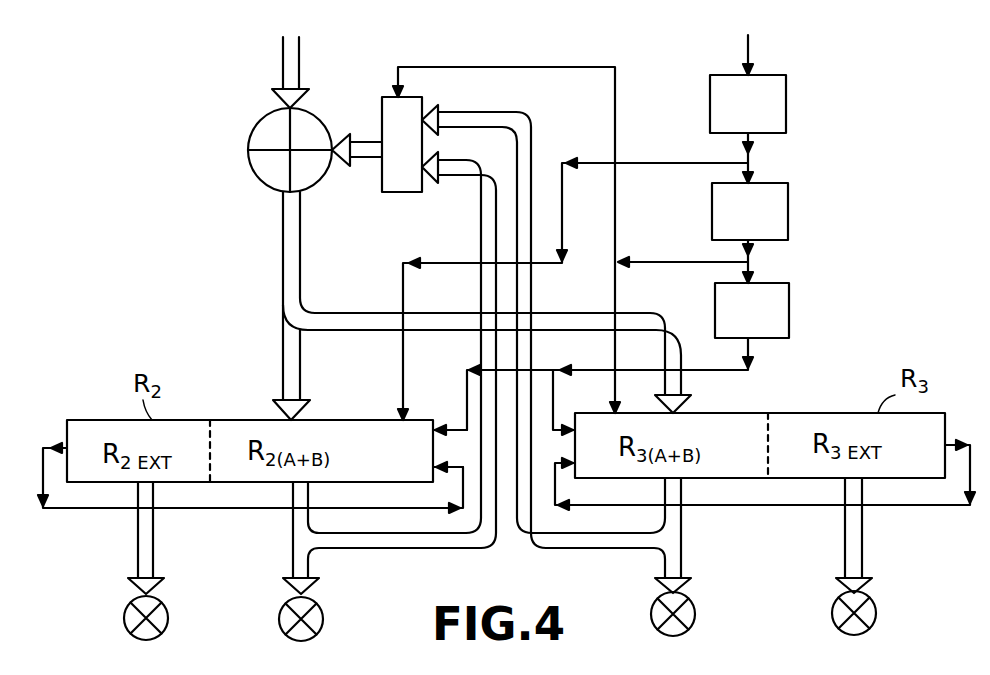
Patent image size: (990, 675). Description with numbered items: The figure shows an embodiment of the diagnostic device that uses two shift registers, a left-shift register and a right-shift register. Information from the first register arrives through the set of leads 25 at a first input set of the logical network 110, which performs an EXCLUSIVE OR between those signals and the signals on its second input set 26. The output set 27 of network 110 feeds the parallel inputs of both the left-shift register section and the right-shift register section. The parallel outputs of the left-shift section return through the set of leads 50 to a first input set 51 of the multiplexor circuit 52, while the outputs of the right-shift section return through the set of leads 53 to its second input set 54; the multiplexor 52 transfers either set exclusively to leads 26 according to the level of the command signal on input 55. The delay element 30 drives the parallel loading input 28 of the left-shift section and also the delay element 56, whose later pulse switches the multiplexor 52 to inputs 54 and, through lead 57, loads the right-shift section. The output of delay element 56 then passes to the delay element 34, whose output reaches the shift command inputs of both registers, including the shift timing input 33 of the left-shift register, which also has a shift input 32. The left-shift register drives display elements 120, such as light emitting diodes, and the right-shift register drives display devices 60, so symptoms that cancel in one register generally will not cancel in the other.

The input terminals 25 is at (282, 64).
The logical network 110 is at (250, 150).
The second set of input terminals 26 is at (366, 140).
The multiplexor circuit 52 is at (384, 192).
The command input 55 is at (429, 67).
The second input set 54 is at (455, 112).
The first input set 51 is at (431, 184).
The set of leads 50 is at (421, 549).
The set of leads 53 is at (593, 550).
The delay element 30 is at (786, 113).
The delay element 56 is at (788, 210).
The delay element 34 is at (790, 306).
The lead 57 is at (613, 358).
The parallel loading input 28 is at (403, 394).
The output set 27 is at (283, 243).
The shift timing input 33 is at (456, 426).
The shift input 32 is at (461, 474).
The display elements 120 is at (170, 616).
The display devices 60 is at (700, 609).